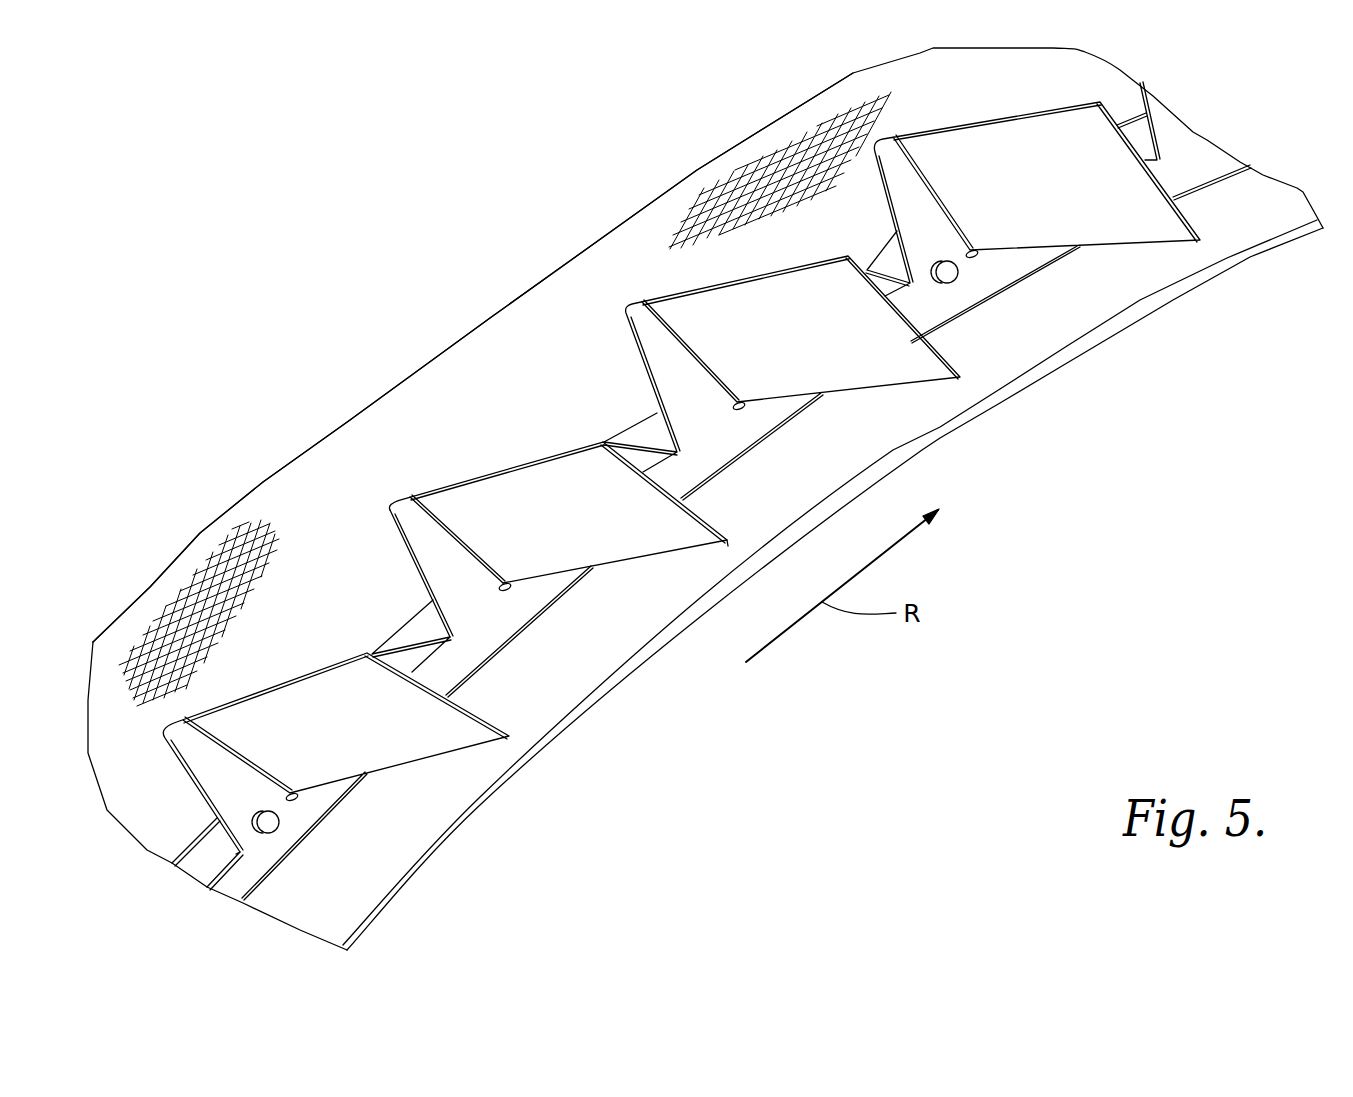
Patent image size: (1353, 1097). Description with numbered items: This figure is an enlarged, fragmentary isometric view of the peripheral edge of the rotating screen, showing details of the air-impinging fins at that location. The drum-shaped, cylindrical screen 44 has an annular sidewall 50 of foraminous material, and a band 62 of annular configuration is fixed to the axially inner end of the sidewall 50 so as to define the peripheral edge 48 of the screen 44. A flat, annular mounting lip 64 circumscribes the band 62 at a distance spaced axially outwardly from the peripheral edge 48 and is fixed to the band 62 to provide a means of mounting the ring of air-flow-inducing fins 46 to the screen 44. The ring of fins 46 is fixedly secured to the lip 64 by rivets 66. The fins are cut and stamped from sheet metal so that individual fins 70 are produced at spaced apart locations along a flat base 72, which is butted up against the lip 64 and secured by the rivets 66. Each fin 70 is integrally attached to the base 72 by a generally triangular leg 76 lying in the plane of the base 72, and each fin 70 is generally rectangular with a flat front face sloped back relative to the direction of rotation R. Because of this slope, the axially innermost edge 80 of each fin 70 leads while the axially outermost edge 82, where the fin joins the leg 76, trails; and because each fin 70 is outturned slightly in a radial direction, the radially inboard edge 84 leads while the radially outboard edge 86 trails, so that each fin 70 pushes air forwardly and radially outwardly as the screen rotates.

The cylindrical screen 44 is at (337, 427).
The air-flow-inducing fins 46 is at (1047, 97).
The peripheral edge 48 is at (431, 863).
The annular sidewall 50 is at (570, 283).
The band 62 is at (540, 712).
The mounting lip 64 is at (202, 858).
The rivets 66 is at (273, 827).
The fin 70 is at (550, 535).
The base 72 is at (478, 643).
The leg 76 is at (411, 532).
The axially innermost edge 80 is at (707, 520).
The axially outermost edge 82 is at (470, 550).
The radially inboard edge 84 is at (677, 560).
The radially outboard edge 86 is at (552, 458).